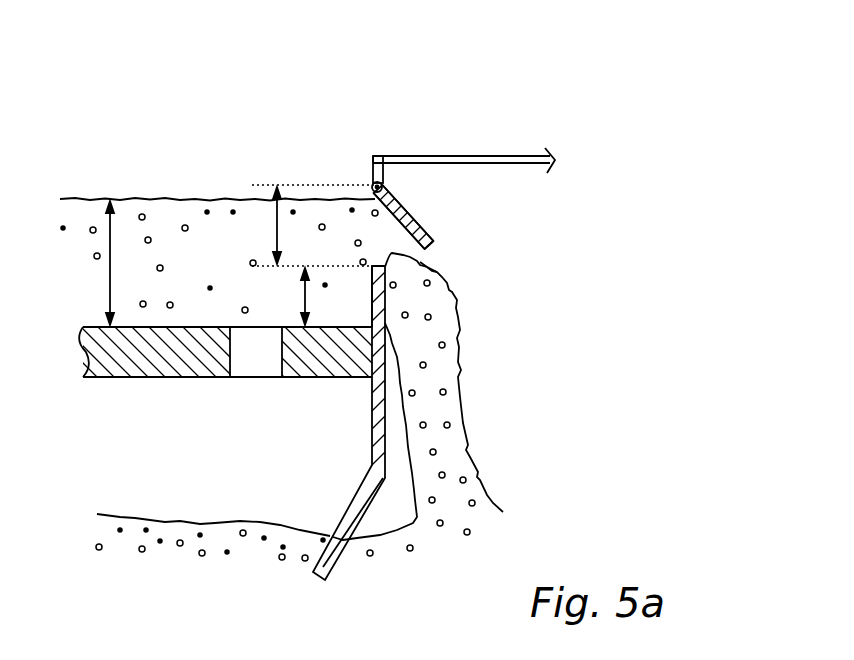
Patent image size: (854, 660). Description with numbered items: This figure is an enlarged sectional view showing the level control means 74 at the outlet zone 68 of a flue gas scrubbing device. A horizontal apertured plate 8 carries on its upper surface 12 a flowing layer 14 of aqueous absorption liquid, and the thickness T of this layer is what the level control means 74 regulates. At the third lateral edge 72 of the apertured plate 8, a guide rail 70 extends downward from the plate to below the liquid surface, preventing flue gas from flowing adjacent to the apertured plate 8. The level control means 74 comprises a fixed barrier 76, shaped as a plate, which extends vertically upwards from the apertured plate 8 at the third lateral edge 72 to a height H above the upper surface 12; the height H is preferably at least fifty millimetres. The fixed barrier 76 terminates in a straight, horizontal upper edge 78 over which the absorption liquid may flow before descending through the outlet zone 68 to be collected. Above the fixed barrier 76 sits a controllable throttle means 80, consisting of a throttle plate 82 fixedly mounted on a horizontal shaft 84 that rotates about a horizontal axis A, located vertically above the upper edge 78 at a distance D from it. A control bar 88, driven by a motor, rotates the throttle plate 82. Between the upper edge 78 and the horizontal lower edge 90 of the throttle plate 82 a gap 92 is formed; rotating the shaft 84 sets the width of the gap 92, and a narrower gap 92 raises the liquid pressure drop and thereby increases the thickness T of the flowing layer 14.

The apertured plate 8 is at (157, 367).
The upper surface 12 is at (197, 327).
The flowing layer 14 is at (145, 210).
The outlet zone 68 is at (473, 310).
The guide rail 70 is at (352, 502).
The third lateral edge 72 is at (378, 357).
The level control means 74 is at (489, 125).
The fixed barrier 76 is at (367, 290).
The upper edge 78 is at (433, 270).
The throttle means 80 is at (410, 196).
The throttle plate 82 is at (420, 213).
The horizontal shaft 84 is at (373, 181).
The control bar 88 is at (519, 156).
The lower edge 90 is at (433, 248).
The gap 92 is at (400, 247).
The horizontal axis A is at (390, 180).
The thickness T is at (123, 263).
The distance D is at (310, 224).
The height H is at (312, 295).